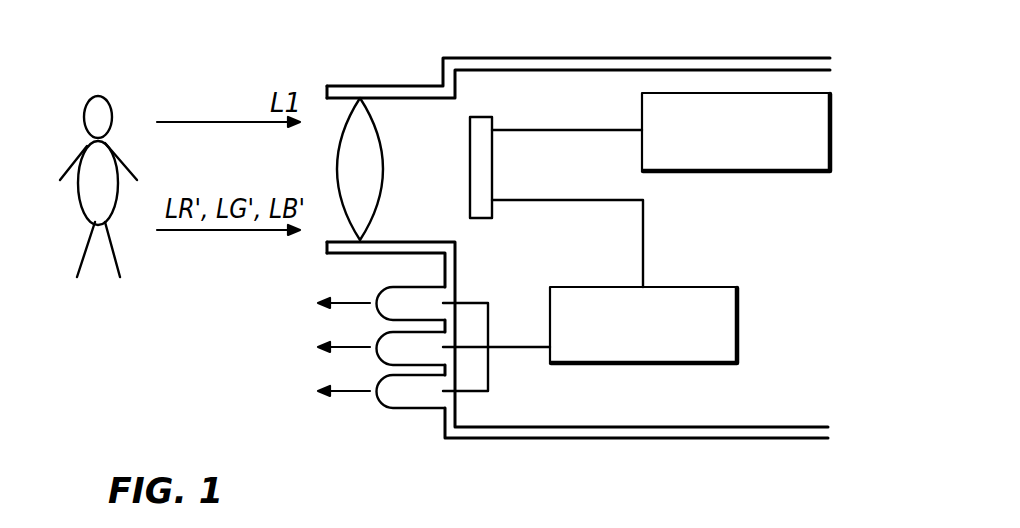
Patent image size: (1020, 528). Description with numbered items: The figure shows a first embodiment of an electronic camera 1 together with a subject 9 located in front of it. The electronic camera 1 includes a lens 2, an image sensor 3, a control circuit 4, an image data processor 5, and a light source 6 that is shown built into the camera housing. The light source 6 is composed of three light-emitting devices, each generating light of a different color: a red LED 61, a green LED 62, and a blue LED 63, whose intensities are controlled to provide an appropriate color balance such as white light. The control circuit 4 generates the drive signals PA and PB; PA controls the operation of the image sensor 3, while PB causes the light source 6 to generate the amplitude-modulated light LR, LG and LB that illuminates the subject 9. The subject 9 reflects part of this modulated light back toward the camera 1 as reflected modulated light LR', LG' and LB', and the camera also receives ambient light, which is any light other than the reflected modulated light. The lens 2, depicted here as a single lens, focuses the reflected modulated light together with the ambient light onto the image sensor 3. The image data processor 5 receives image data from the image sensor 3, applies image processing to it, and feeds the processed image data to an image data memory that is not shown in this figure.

The electronic camera 1 is at (685, 44).
The lens 2 is at (337, 162).
The image sensor 3 is at (469, 168).
The control circuit 4 is at (678, 362).
The image data processor 5 is at (770, 170).
The light source 6 is at (362, 374).
The red LED 61 is at (387, 290).
The green LED 62 is at (387, 337).
The blue LED 63 is at (387, 378).
The subject 9 is at (110, 212).